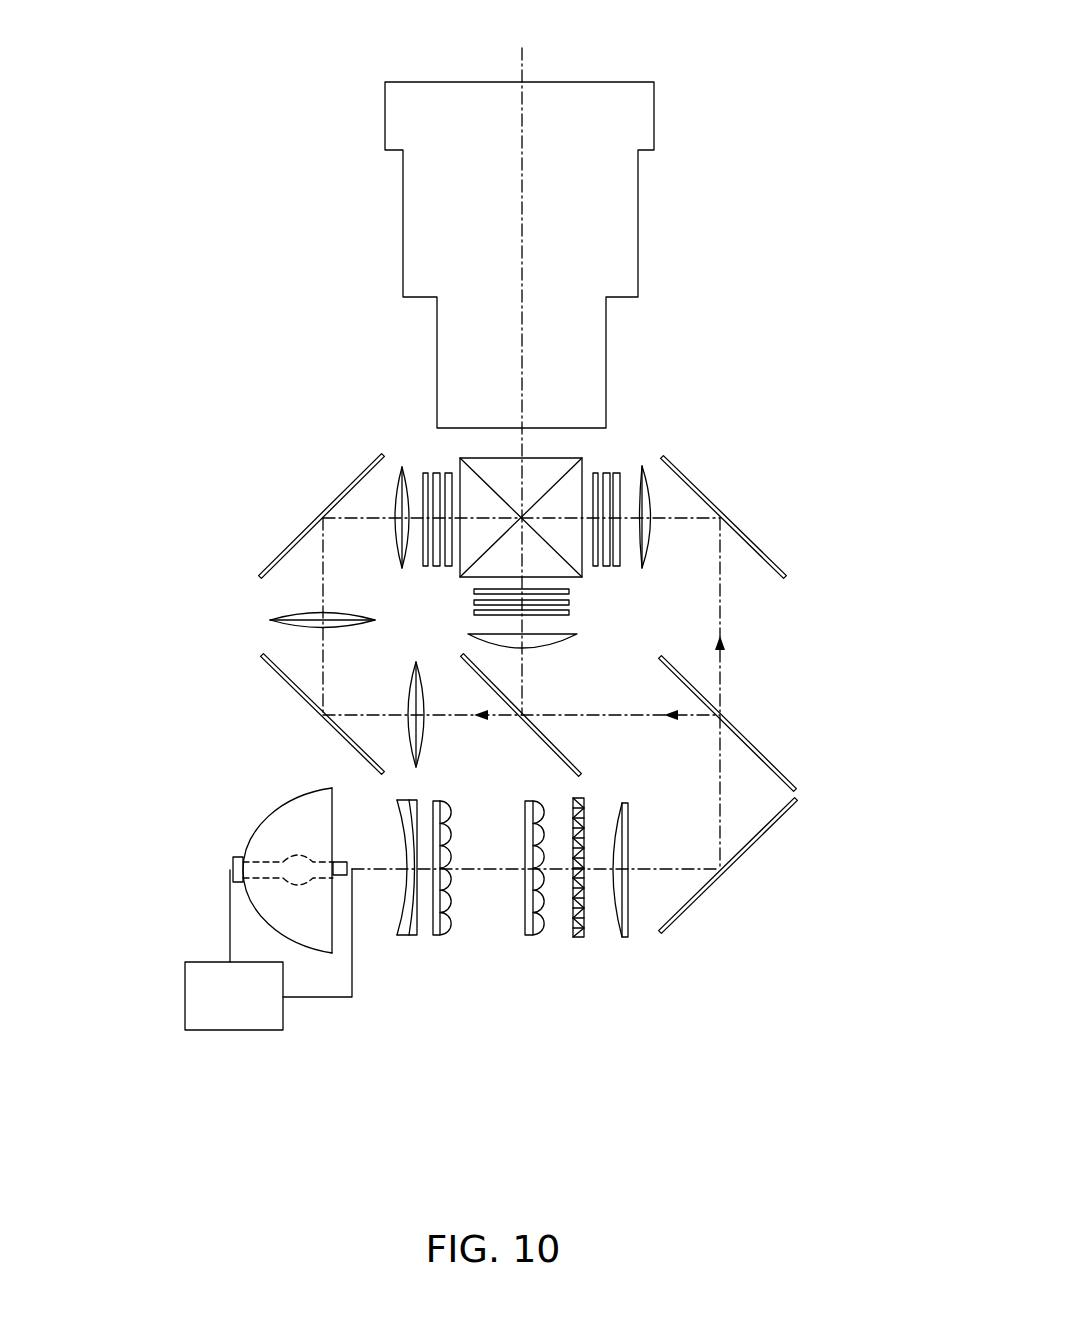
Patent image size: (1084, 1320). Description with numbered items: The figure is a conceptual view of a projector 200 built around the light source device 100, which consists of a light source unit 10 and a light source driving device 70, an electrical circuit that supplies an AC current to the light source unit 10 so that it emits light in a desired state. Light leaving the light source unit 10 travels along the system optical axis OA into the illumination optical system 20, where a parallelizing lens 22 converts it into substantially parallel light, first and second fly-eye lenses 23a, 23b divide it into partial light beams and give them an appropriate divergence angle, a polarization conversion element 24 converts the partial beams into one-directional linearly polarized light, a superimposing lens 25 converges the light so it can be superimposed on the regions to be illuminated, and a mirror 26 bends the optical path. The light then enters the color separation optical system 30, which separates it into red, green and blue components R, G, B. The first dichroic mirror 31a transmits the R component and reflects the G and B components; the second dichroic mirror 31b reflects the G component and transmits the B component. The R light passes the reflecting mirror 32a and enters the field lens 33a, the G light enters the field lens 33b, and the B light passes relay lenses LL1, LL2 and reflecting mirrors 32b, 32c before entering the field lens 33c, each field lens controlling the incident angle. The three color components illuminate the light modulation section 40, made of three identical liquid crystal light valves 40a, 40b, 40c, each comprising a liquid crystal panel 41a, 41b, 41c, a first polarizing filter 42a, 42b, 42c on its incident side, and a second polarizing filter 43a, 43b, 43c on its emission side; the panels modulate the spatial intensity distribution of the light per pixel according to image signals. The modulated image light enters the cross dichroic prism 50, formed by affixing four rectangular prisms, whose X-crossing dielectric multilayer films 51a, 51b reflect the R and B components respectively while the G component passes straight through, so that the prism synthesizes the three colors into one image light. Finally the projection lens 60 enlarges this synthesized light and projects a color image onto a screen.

The projector 200 is at (865, 35).
The projection lens 60 is at (585, 258).
The cross dichroic prism 50 is at (506, 453).
The first dielectric multilayer film 51a is at (468, 460).
The second dielectric multilayer film 51b is at (575, 460).
The liquid crystal light valve 40a is at (696, 516).
The liquid crystal light valve 40b is at (543, 646).
The liquid crystal light valve 40c is at (342, 548).
The light modulation section 40 is at (696, 516).
The liquid crystal panel 41a is at (608, 548).
The liquid crystal panel 41b is at (571, 602).
The liquid crystal panel 41c is at (435, 508).
The first polarizing filter 42a is at (616, 568).
The first polarizing filter 42b is at (487, 614).
The first polarizing filter 42c is at (425, 568).
The second polarizing filter 43a is at (598, 568).
The second polarizing filter 43b is at (474, 592).
The second polarizing filter 43c is at (448, 568).
The field lens 33a is at (648, 500).
The field lens 33b is at (572, 646).
The field lens 33c is at (395, 540).
The reflecting mirror 32a is at (770, 560).
The reflecting mirror 32b is at (287, 688).
The reflecting mirror 32c is at (285, 560).
The first dichroic mirror 31a is at (770, 745).
The second dichroic mirror 31b is at (560, 745).
The color separation optical system 30 is at (208, 683).
The relay lens LL1 is at (425, 745).
The relay lens LL2 is at (275, 625).
The red light component R is at (720, 603).
The green light component G is at (522, 700).
The blue light component B is at (323, 595).
The system optical axis OA is at (478, 872).
The mirror 26 is at (696, 897).
The superimposing lens 25 is at (628, 937).
The polarization conversion element 24 is at (578, 937).
The first fly-eye lens 23a is at (437, 937).
The second fly-eye lens 23b is at (528, 937).
The parallelizing lens 22 is at (403, 935).
The illumination optical system 20 is at (450, 1012).
The light source unit 10 is at (248, 840).
The light source driving device 70 is at (185, 993).
The light source device 100 is at (245, 1035).